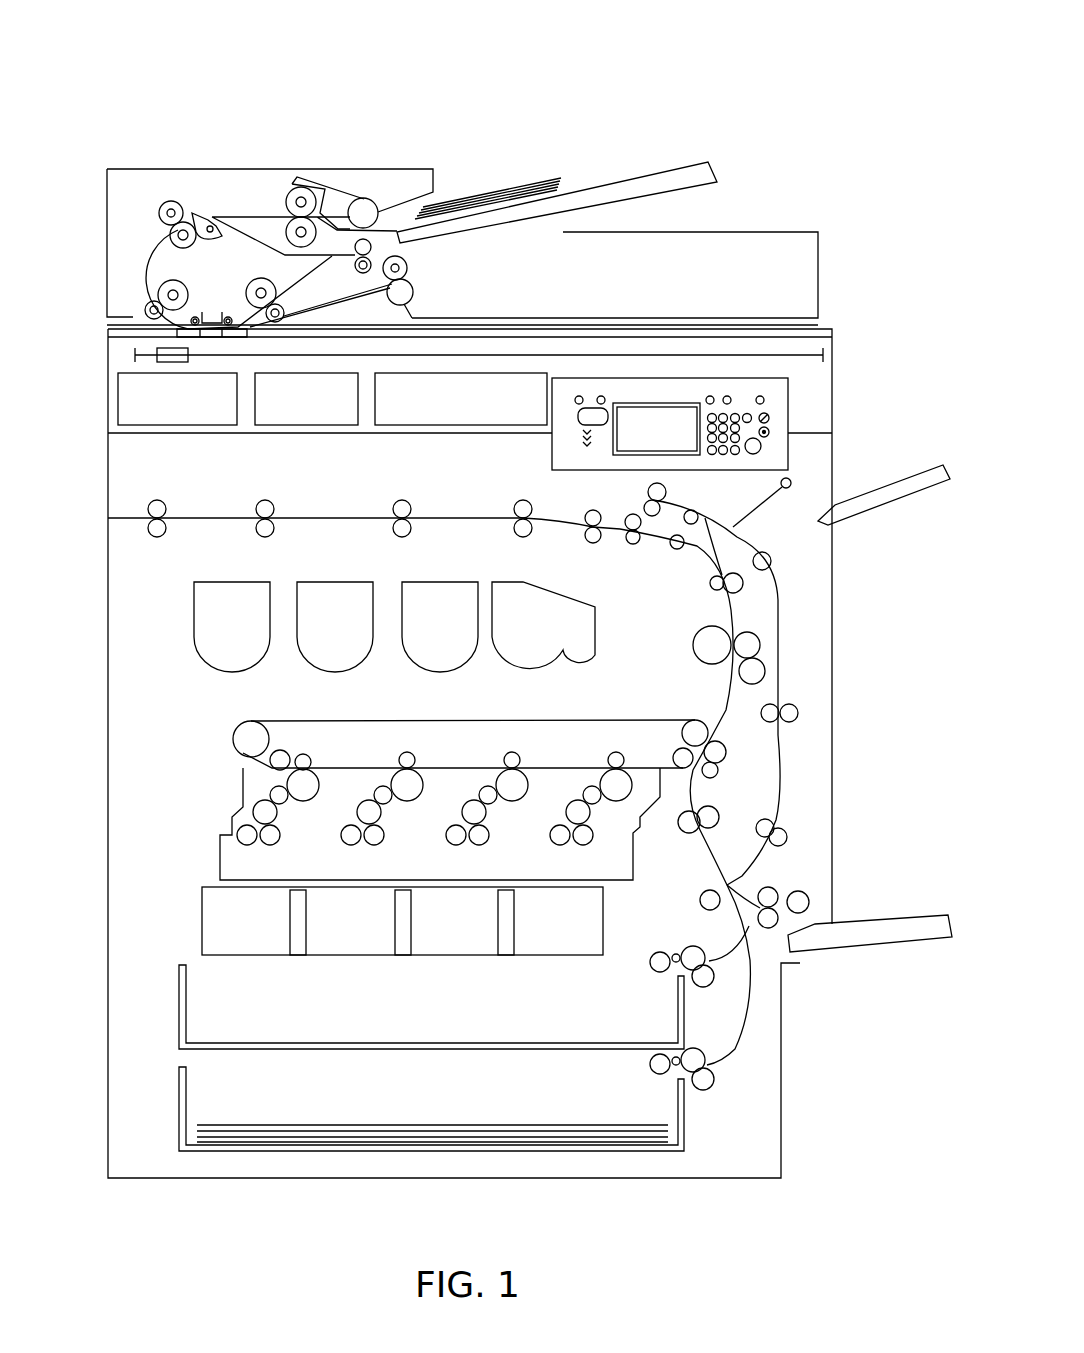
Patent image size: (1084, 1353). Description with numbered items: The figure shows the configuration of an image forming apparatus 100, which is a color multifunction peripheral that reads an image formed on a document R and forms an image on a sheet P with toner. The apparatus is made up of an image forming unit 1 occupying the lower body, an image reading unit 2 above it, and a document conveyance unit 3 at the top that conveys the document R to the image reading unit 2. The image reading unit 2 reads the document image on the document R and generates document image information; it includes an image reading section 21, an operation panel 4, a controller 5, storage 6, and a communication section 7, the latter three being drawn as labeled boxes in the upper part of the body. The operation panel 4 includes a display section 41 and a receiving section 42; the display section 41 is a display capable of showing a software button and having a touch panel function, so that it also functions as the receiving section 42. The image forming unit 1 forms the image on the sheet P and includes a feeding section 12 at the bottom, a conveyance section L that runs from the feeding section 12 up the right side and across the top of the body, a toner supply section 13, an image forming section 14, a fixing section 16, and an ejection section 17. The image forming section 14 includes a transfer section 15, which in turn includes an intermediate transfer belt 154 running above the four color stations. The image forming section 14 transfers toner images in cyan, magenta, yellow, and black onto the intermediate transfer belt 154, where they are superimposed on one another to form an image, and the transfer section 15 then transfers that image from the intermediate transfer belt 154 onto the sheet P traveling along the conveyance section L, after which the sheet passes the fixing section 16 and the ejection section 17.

The image forming apparatus 100 is at (723, 88).
The image forming unit 1 is at (873, 595).
The image reading unit 2 is at (837, 367).
The document conveyance unit 3 is at (838, 283).
The operation panel 4 is at (719, 372).
The display section 41 is at (642, 403).
The receiving section 42 is at (670, 403).
The controller 5 is at (118, 392).
The storage 6 is at (335, 425).
The communication section 7 is at (487, 425).
The image reading section 21 is at (157, 348).
The feeding section 12 is at (167, 1097).
The toner supply section 13 is at (162, 627).
The image forming section 14 is at (157, 850).
The transfer section 15 is at (385, 719).
The intermediate transfer belt 154 is at (400, 722).
The fixing section 16 is at (698, 618).
The ejection section 17 is at (138, 500).
The conveyance section L is at (320, 510).
The sheet P is at (299, 1139).
The document R is at (540, 178).